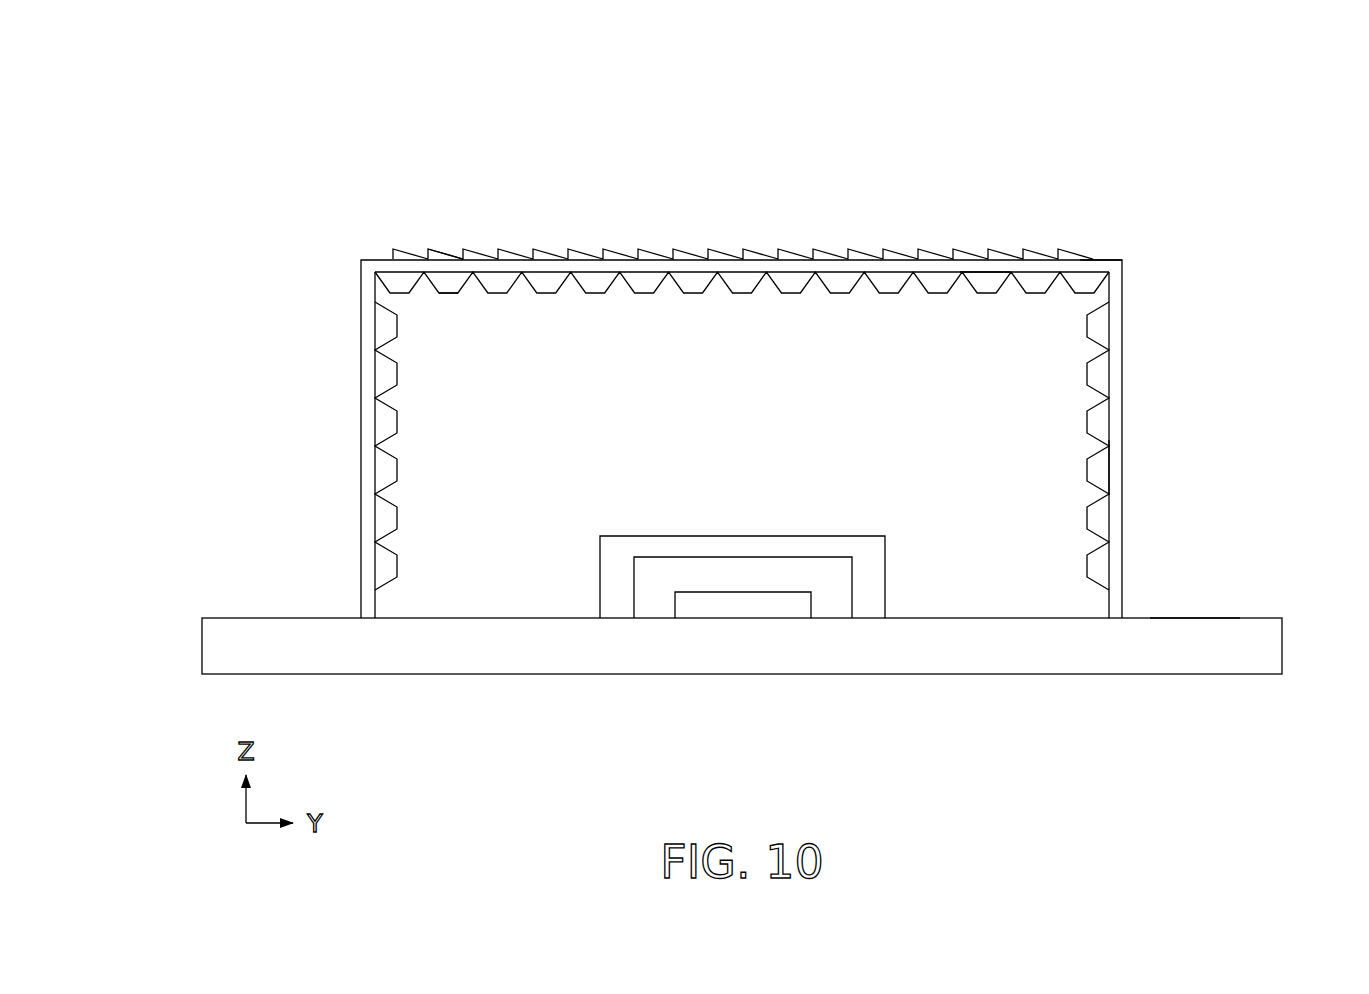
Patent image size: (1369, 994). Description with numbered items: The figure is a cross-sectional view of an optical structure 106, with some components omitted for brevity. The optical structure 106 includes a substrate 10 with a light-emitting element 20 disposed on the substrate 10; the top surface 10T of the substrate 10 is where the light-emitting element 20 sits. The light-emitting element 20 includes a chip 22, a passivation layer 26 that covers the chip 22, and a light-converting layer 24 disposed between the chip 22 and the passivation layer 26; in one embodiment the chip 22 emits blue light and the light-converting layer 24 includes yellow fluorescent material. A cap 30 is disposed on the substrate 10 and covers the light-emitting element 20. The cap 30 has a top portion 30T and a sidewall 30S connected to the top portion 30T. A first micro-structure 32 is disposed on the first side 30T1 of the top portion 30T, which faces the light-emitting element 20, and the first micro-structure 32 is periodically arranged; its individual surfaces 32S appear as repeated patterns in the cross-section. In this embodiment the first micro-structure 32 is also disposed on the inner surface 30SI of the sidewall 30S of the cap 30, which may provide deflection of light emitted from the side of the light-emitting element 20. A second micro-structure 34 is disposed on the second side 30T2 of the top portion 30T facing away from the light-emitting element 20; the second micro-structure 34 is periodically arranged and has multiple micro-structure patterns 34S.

The optical structure 106 is at (196, 144).
The substrate 10 is at (216, 645).
The top surface of substrate 10T is at (1197, 610).
The light-emitting element 20 is at (655, 487).
The chip 22 is at (688, 600).
The light-converting layer 24 is at (662, 580).
The passivation layer 26 is at (618, 578).
The cap 30 is at (1272, 73).
The sidewall 30S is at (1125, 421).
The inner surface 30SI is at (1103, 468).
The top portion 30T is at (1040, 268).
The first side 30T1 is at (985, 290).
The second side 30T2 is at (1112, 252).
The first micro-structure 32 is at (630, 316).
The surface of inner protrusion 32S is at (453, 290).
The second micro-structure 34 is at (578, 243).
The micro-structure patterns 34S is at (433, 250).